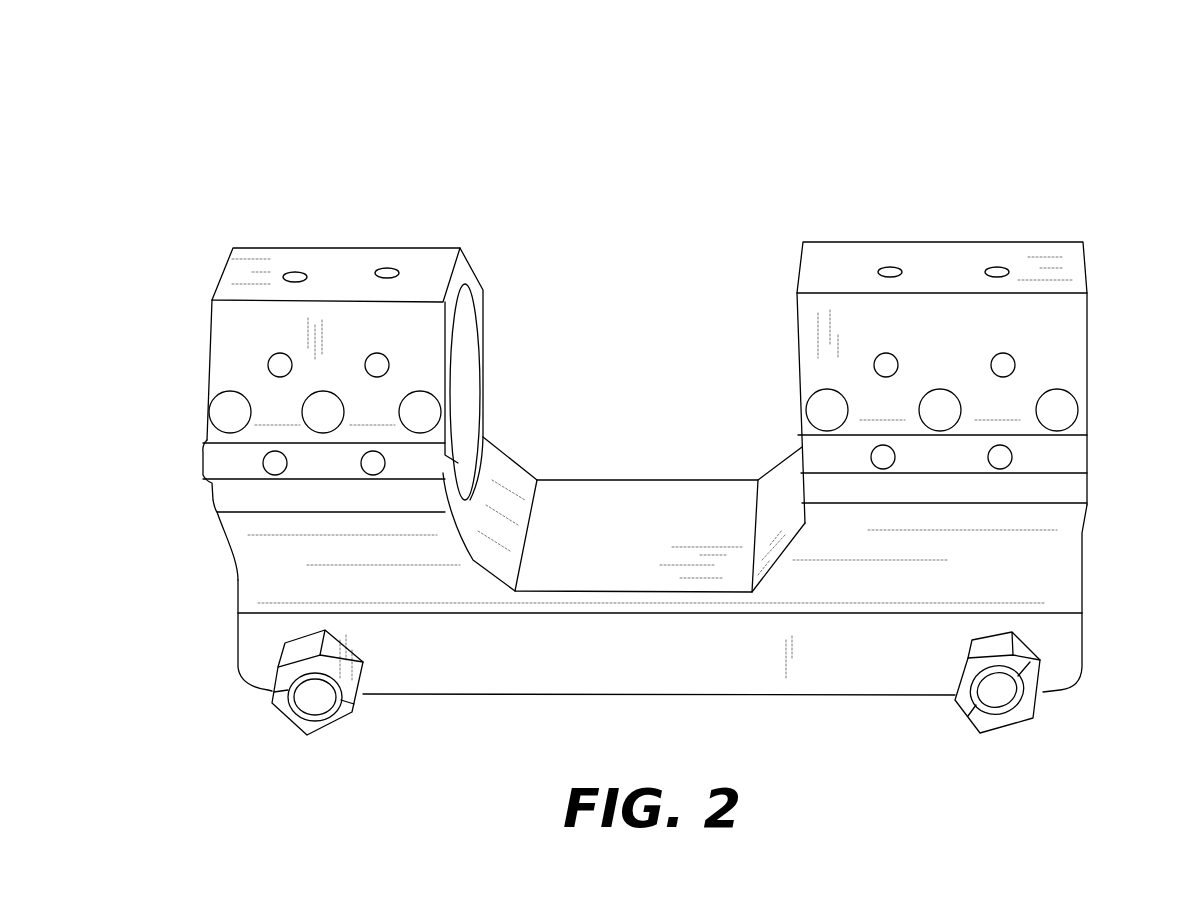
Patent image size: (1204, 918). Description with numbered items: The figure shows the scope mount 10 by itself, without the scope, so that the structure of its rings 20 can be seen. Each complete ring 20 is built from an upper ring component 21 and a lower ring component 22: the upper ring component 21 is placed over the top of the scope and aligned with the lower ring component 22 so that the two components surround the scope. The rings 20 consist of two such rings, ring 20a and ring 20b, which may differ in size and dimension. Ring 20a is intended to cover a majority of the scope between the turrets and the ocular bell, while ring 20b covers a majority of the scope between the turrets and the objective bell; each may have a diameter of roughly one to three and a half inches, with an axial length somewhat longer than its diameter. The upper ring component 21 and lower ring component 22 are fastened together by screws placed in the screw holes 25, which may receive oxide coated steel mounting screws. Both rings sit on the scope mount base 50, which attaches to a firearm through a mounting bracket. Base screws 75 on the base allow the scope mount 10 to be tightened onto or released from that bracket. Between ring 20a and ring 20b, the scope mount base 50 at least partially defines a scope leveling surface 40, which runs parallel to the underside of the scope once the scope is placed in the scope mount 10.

The scope mount 10 is at (794, 141).
The rings 20 is at (534, 257).
The ring 20a is at (1050, 243).
The ring 20b is at (432, 258).
The upper ring component 21 is at (217, 343).
The lower ring component 22 is at (233, 490).
The screw holes 25 is at (227, 415).
The leveling surface 40 is at (620, 495).
The scope mount base 50 is at (520, 676).
The base screws 75 is at (310, 698).